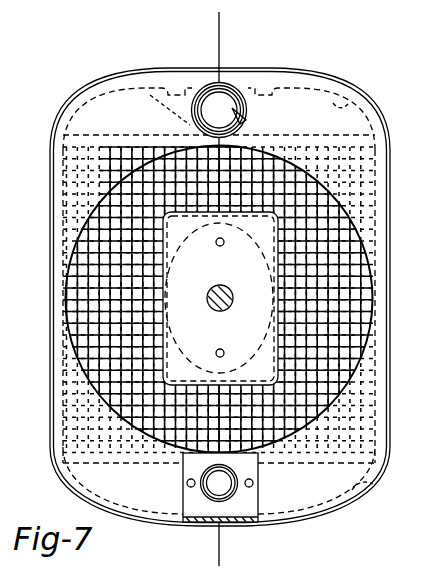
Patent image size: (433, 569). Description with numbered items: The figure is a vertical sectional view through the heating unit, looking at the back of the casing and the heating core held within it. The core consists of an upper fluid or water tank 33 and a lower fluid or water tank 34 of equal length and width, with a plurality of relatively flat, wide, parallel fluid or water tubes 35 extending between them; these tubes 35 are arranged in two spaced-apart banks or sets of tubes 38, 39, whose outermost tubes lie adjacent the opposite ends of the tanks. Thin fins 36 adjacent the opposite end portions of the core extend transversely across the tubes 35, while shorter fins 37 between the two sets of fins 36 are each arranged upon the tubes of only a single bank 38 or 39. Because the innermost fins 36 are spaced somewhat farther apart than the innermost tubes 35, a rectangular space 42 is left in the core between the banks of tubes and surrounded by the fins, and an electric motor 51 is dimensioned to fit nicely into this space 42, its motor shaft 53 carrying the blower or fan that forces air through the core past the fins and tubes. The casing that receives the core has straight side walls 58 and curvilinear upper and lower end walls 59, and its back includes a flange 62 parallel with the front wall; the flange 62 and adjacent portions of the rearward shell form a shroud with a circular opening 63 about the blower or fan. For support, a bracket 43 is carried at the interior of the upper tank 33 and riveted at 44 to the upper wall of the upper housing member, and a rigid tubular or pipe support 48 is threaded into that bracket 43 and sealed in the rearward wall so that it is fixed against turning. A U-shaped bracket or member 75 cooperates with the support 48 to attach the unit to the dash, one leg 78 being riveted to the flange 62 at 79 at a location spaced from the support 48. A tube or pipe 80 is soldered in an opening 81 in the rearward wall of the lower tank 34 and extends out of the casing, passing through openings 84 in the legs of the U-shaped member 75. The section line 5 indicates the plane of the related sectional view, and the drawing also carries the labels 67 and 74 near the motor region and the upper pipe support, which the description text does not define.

The section line 5- 5 is at (219, 32).
The upper fluid or water tank 33 is at (377, 96).
The lower fluid or water tank 34 is at (373, 485).
The fluid or water tubes 35 is at (350, 256).
The fins 36 is at (313, 202).
The fins 37 is at (352, 328).
The bank or set of tubes 38 is at (93, 340).
The bank or set of tubes 39 is at (347, 348).
The rectangular space 42 is at (67, 212).
The bracket 43 is at (182, 90).
The rivets 44 is at (187, 90).
The tubular or pipe support 48 is at (248, 121).
The electric motor 51 is at (220, 298).
The motor shaft 53 is at (220, 311).
The side walls 58 is at (50, 393).
The upper and lower end walls 59 is at (347, 503).
The flange 62 is at (343, 183).
The circular opening 63 is at (105, 407).
The speaker cone 67 is at (203, 246).
The upper port ring 74 is at (232, 84).
The bracket or member 75 is at (248, 498).
The leg 78 is at (183, 497).
The rivets 79 is at (186, 482).
The tube or pipe 80 is at (238, 505).
The opening 81 is at (213, 490).
The openings 84 is at (243, 527).